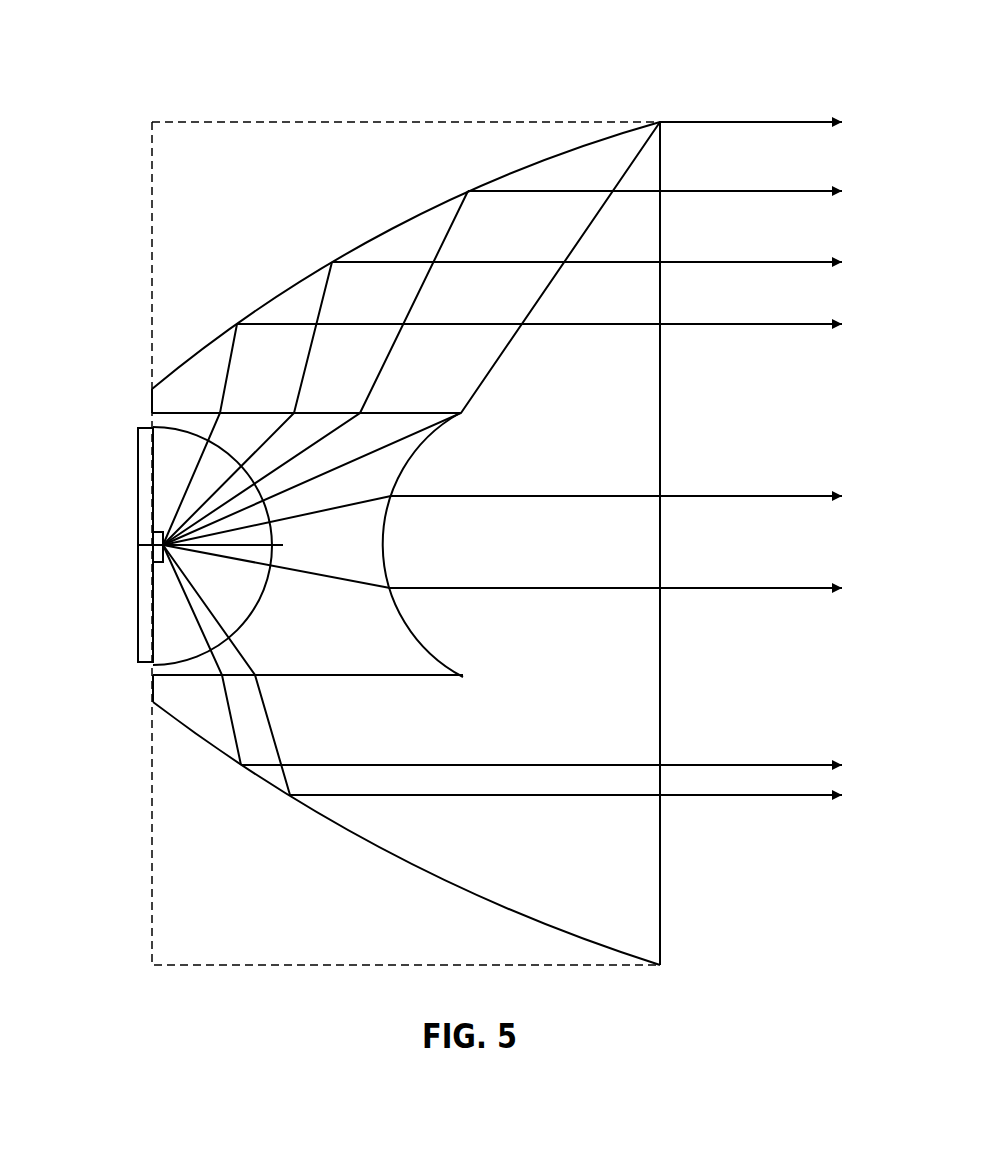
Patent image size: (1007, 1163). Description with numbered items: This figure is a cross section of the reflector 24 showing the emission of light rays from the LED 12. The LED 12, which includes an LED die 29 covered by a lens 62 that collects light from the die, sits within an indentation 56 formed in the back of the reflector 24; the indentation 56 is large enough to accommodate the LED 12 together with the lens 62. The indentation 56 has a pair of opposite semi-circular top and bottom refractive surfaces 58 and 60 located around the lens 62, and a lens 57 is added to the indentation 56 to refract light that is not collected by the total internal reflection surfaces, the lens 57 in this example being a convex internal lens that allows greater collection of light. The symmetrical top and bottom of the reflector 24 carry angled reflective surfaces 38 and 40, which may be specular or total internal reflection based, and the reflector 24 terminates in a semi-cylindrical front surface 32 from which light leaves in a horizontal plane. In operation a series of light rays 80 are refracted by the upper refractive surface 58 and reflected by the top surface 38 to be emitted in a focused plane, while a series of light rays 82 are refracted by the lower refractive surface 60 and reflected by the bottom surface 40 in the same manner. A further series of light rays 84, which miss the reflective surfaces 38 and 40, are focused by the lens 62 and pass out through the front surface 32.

The LED 12 is at (125, 505).
The reflector 24 is at (276, 283).
The LED die 29 is at (162, 555).
The front surface 32 is at (660, 677).
The angled reflective surface 38 is at (370, 237).
The angled reflective surface 40 is at (362, 842).
The indentation 56 is at (287, 657).
The lens 57 is at (420, 648).
The top refractive surface 58 is at (158, 420).
The bottom refractive surface 60 is at (170, 675).
The lens 62 is at (283, 557).
The light rays 80 is at (810, 226).
The light rays 82 is at (837, 782).
The light rays 84 is at (843, 542).